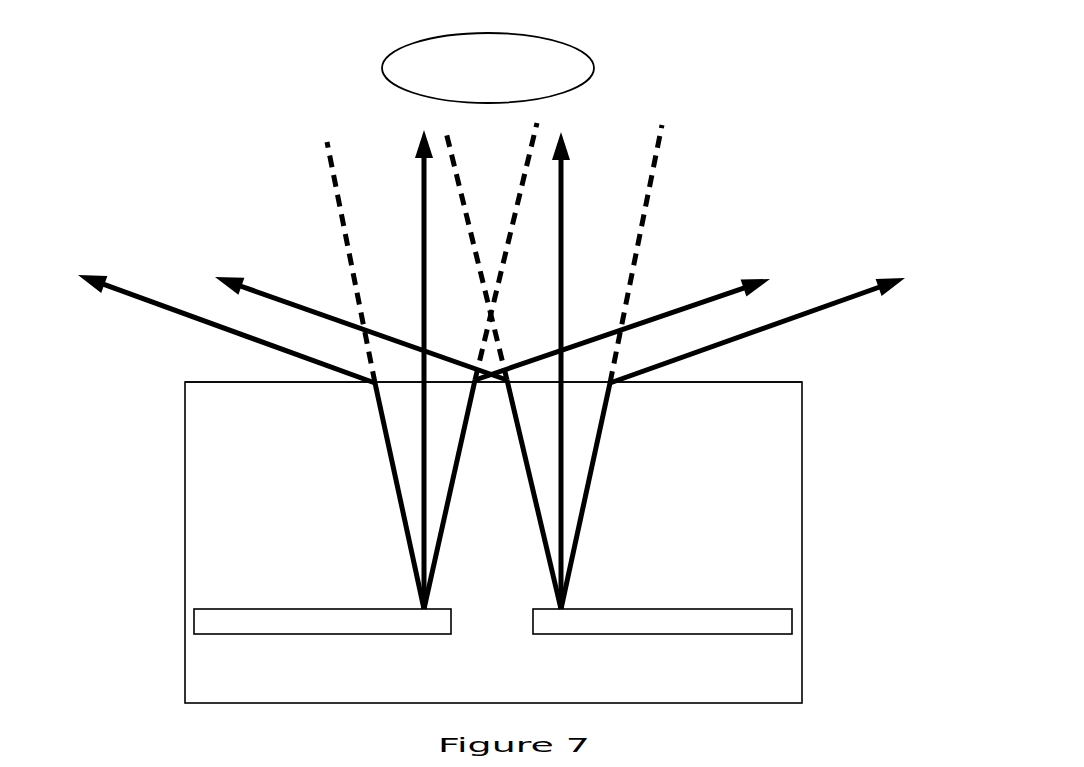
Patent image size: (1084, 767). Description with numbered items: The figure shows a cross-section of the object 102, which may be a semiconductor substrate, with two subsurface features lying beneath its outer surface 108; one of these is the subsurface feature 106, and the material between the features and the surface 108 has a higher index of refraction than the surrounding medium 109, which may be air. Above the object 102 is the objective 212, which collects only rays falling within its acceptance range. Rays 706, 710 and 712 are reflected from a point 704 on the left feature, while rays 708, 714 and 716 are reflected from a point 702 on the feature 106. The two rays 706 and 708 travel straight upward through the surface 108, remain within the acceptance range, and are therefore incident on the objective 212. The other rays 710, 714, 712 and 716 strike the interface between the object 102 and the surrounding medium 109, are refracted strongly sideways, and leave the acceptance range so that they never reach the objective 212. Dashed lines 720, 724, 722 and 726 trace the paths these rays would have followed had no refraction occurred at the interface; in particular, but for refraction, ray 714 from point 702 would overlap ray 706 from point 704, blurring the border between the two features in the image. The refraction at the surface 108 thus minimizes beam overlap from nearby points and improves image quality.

The object 102 is at (790, 382).
The subsurface feature 106 is at (275, 608).
The outer surface 108 is at (204, 364).
The surrounding medium 109 is at (192, 180).
The objective 212 is at (587, 50).
The point on feature 106 702 is at (560, 612).
The point on feature 104 704 is at (425, 612).
The ray 706 is at (423, 180).
The ray 708 is at (562, 178).
The ray 710 is at (128, 290).
The ray 712 is at (740, 288).
The ray 714 is at (260, 290).
The ray 716 is at (865, 290).
The dashed line 720 is at (334, 173).
The dashed line 722 is at (527, 150).
The dashed line 724 is at (455, 152).
The dashed line 726 is at (657, 162).